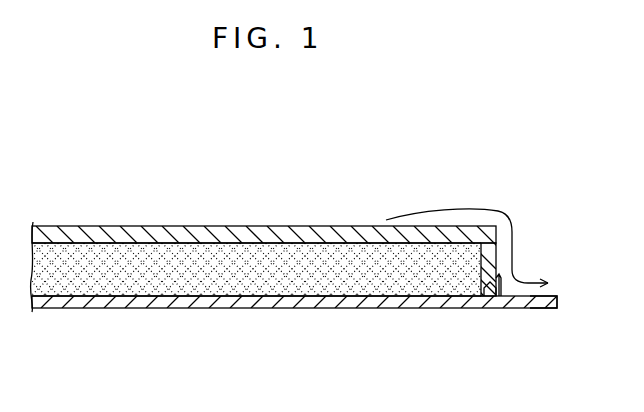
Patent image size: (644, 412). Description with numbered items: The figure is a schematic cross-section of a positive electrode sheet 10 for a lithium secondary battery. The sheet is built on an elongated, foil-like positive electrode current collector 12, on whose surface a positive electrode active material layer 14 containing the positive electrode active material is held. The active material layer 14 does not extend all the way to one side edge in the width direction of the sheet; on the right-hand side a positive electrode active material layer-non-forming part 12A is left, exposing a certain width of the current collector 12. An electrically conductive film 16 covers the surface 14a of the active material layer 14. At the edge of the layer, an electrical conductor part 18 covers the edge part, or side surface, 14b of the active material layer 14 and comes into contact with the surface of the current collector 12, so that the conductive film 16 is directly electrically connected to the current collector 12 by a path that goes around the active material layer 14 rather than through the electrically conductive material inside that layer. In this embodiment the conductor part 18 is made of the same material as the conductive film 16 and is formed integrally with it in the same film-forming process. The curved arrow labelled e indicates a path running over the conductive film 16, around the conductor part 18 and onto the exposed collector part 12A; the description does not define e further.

The positive electrode sheet 10 is at (481, 160).
The positive electrode current collector 12 is at (371, 309).
The positive electrode active material layer-non-forming part 12A is at (525, 297).
The positive electrode active material layer 14 is at (283, 258).
The surface of the positive electrode active material layer 14a is at (342, 228).
The edge part of the positive electrode active material layer 14b is at (487, 297).
The electrically conductive film 16 is at (210, 228).
The electrical conductor part 18 is at (500, 296).
The path of liquid e is at (467, 237).